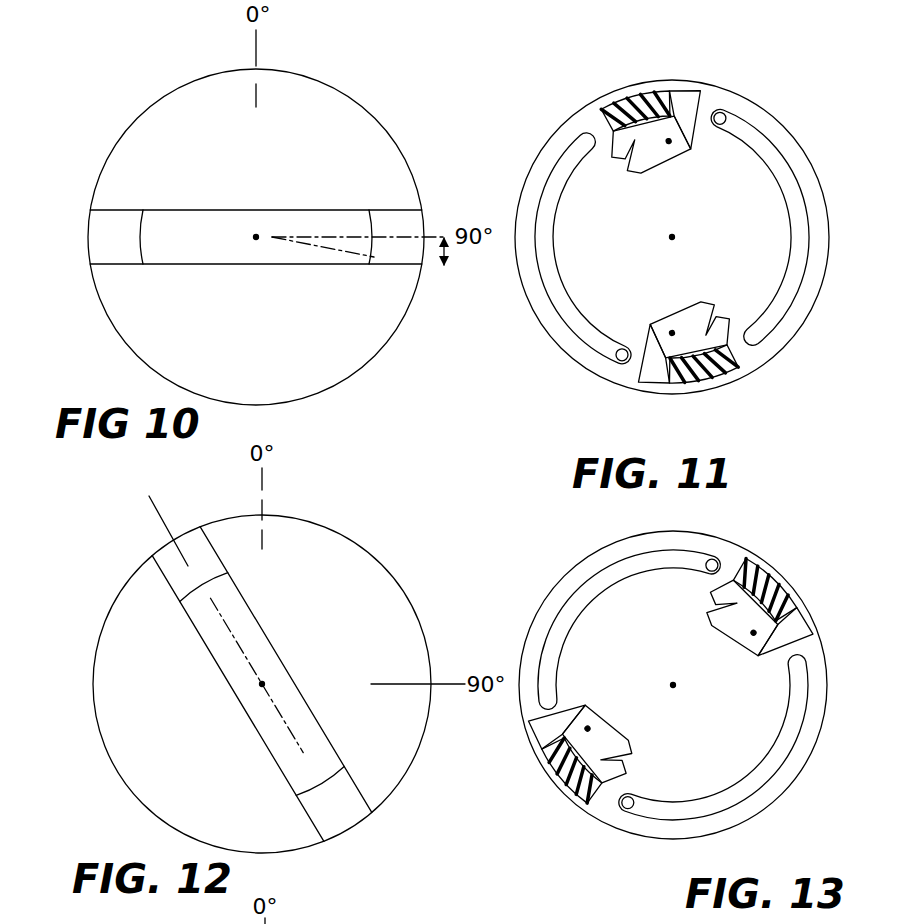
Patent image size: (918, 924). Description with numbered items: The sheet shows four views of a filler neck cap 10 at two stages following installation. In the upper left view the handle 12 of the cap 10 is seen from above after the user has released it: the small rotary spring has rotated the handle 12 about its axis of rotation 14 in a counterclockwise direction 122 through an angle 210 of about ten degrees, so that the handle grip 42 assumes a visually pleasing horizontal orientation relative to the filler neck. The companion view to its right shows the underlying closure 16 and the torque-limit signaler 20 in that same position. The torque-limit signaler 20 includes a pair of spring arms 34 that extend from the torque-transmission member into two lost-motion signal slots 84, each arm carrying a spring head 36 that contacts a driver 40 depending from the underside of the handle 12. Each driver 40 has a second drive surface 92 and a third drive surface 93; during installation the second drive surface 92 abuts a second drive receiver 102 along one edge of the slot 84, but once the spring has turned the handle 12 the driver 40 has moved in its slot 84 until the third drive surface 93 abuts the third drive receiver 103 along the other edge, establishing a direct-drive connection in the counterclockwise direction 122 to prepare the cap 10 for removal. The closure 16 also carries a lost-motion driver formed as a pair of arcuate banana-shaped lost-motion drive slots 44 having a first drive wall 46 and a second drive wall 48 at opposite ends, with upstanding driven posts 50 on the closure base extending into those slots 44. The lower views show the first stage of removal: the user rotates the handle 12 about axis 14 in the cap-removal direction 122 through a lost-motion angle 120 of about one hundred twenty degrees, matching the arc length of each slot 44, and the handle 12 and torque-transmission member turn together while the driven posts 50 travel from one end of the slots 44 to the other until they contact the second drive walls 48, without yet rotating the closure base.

In FIG. 10, the filler neck cap 10 is at (92, 104).
In FIG. 12, the filler neck cap 10 is at (98, 571).
In FIG. 10, the handle 12 is at (172, 84).
In FIG. 12, the handle 12 is at (124, 572).
In FIG. 10, the axis of rotation 14 is at (259, 234).
In FIG. 11, the axis of rotation 14 is at (669, 241).
In FIG. 12, the axis of rotation 14 is at (262, 681).
In FIG. 11, the closure 16 is at (824, 145).
In FIG. 13, the closure 16 is at (534, 599).
In FIG. 11, the torque-limit signaler 20 is at (698, 238).
In FIG. 13, the torque-limit signaler 20 is at (661, 700).
In FIG. 11, the spring arm 34 is at (652, 166).
In FIG. 13, the spring arm 34 is at (738, 622).
In FIG. 11, the spring head 36 is at (695, 130).
In FIG. 13, the spring head 36 is at (772, 660).
In FIG. 11, the driver 40 is at (632, 94).
In FIG. 13, the driver 40 is at (763, 567).
In FIG. 10, the handle grip 42 is at (170, 225).
In FIG. 12, the handle grip 42 is at (237, 615).
In FIG. 11, the lost-motion drive slot 44 is at (539, 227).
In FIG. 13, the lost-motion drive slot 44 is at (603, 567).
In FIG. 11, the first drive wall 46 is at (727, 116).
In FIG. 13, the first drive wall 46 is at (556, 667).
In FIG. 11, the second drive wall 48 is at (572, 144).
In FIG. 13, the second drive wall 48 is at (716, 574).
In FIG. 11, the driven post 50 is at (728, 121).
In FIG. 13, the driven post 50 is at (708, 569).
In FIG. 11, the lost-motion signal slot 84 is at (674, 146).
In FIG. 13, the lost-motion signal slot 84 is at (589, 726).
In FIG. 11, the second drive surface 92 is at (665, 386).
In FIG. 13, the second drive surface 92 is at (570, 720).
In FIG. 11, the third drive surface 93 is at (724, 332).
In FIG. 13, the third drive surface 93 is at (608, 805).
In FIG. 11, the second drive receiver 102 is at (667, 386).
In FIG. 13, the second drive receiver 102 is at (590, 717).
In FIG. 11, the third drive receiver 103 is at (714, 386).
In FIG. 13, the third drive receiver 103 is at (575, 802).
In FIG. 12, the lost-motion angle 120 is at (452, 679).
In FIG. 10, the counterclockwise direction 122 is at (367, 405).
In FIG. 12, the counterclockwise direction 122 is at (170, 519).
In FIG. 10, the angle 210 is at (454, 266).